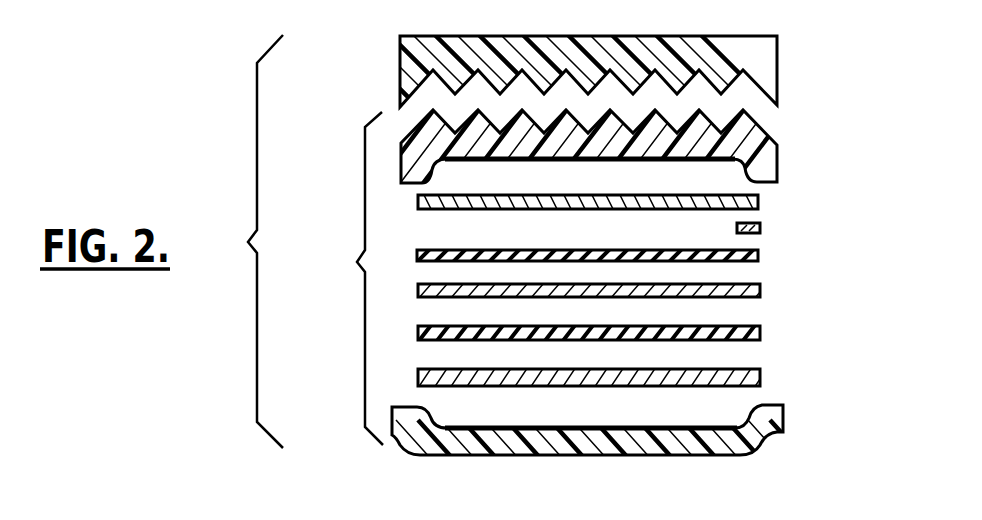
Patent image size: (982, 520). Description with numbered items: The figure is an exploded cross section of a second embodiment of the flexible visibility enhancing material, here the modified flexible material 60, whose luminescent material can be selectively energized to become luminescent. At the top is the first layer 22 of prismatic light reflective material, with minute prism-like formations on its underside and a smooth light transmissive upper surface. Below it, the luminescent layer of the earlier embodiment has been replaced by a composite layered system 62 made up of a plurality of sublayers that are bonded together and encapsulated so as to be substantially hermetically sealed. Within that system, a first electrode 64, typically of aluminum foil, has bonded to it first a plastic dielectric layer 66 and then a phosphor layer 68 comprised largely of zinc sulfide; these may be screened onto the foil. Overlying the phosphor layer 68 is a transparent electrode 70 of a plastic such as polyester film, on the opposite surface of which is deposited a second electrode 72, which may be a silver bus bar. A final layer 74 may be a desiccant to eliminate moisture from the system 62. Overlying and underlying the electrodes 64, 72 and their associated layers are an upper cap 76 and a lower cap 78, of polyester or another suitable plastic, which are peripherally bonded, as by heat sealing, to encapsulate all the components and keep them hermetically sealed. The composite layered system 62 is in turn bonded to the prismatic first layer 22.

The first layer 22 is at (779, 67).
The modified flexible material 60 is at (383, 110).
The composite layered system 62 is at (352, 278).
The first electrode 64 is at (762, 375).
The plastic dielectric layer 66 is at (762, 331).
The phosphor layer 68 is at (762, 290).
The transparent electrode 70 is at (762, 255).
The second electrode 72 is at (762, 228).
The final layer 74 is at (761, 201).
The upper cap 76 is at (780, 154).
The lower cap 78 is at (785, 416).